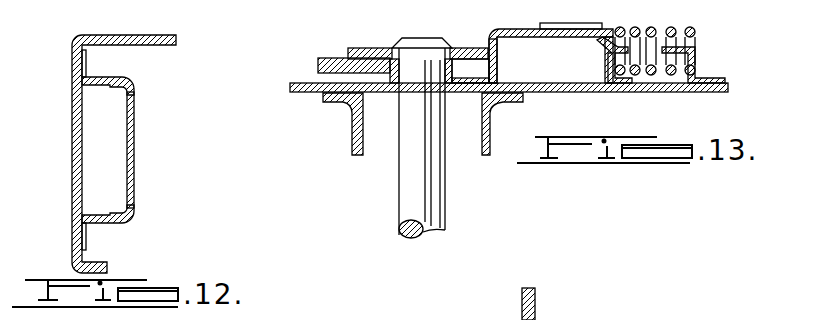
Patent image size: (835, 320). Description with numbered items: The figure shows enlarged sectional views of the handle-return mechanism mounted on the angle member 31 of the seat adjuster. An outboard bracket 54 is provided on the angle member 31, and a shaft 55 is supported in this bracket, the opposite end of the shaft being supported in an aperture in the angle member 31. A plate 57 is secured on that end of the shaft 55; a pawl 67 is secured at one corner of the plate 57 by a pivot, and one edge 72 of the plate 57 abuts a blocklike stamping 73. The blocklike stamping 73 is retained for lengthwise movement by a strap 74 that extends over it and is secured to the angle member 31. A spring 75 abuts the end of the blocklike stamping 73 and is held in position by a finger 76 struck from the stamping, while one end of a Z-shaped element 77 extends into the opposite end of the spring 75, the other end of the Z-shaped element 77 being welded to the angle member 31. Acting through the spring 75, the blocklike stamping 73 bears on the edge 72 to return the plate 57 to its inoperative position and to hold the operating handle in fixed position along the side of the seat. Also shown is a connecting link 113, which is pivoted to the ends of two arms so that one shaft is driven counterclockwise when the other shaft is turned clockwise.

In FIG. 12, the angle member 31 is at (160, 36).
In FIG. 13, the angle member 31 is at (583, 93).
In FIG. 13, the outboard bracket 54 is at (352, 128).
In FIG. 13, the shaft 55 is at (433, 206).
In FIG. 13, the plate 57 is at (467, 48).
In FIG. 13, the pawl 67 is at (318, 64).
In FIG. 13, the edge 72 is at (498, 52).
In FIG. 12, the blocklike stamping 73 is at (135, 129).
In FIG. 13, the blocklike stamping 73 is at (522, 31).
In FIG. 12, the strap 74 is at (113, 79).
In FIG. 13, the strap 74 is at (592, 24).
In FIG. 13, the spring 75 is at (648, 76).
In FIG. 13, the finger 76 is at (608, 63).
In FIG. 13, the Z-shaped element 77 is at (696, 49).
In FIG. 13, the connecting link 113 is at (536, 300).